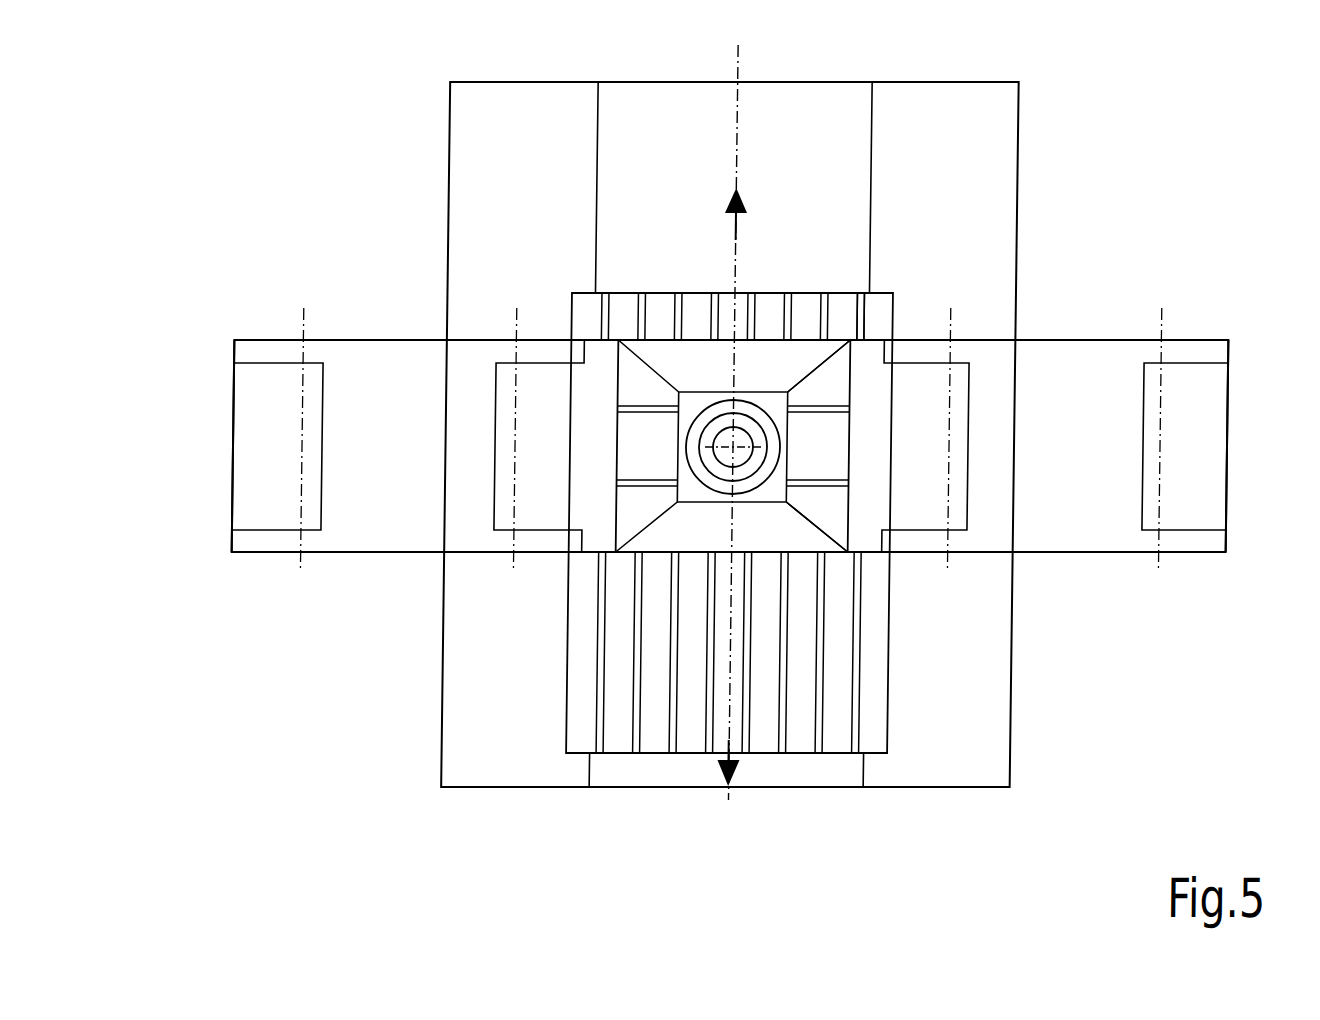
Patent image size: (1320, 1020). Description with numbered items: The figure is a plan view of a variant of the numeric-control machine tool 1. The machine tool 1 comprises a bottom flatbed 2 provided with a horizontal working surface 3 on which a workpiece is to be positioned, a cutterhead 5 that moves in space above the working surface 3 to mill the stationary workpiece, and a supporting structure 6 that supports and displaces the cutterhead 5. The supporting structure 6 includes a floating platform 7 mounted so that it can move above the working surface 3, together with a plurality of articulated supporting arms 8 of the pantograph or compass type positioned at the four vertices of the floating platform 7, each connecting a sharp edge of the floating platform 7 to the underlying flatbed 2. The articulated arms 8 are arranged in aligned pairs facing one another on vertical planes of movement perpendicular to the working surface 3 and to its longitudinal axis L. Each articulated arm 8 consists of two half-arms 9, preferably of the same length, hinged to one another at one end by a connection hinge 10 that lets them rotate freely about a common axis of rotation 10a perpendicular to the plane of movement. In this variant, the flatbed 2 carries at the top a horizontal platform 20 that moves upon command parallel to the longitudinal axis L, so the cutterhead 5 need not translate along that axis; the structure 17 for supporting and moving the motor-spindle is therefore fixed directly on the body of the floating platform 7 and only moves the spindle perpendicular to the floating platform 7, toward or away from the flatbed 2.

The machine tool 1 is at (236, 201).
The bottom flatbed 2 is at (954, 95).
The horizontal working surface 3 is at (860, 325).
The cutterhead 5 is at (684, 518).
The supporting structure 6 is at (1209, 302).
The floating platform 7 is at (873, 492).
The articulated supporting arm 8 is at (209, 410).
The half-arm 9 is at (363, 540).
The connection hinge 10 is at (251, 478).
The axis of rotation 10a is at (300, 562).
The structure for supporting and moving the motor-spindle 17 is at (706, 362).
The horizontal platform 20 is at (658, 303).
The longitudinal axis L is at (735, 70).